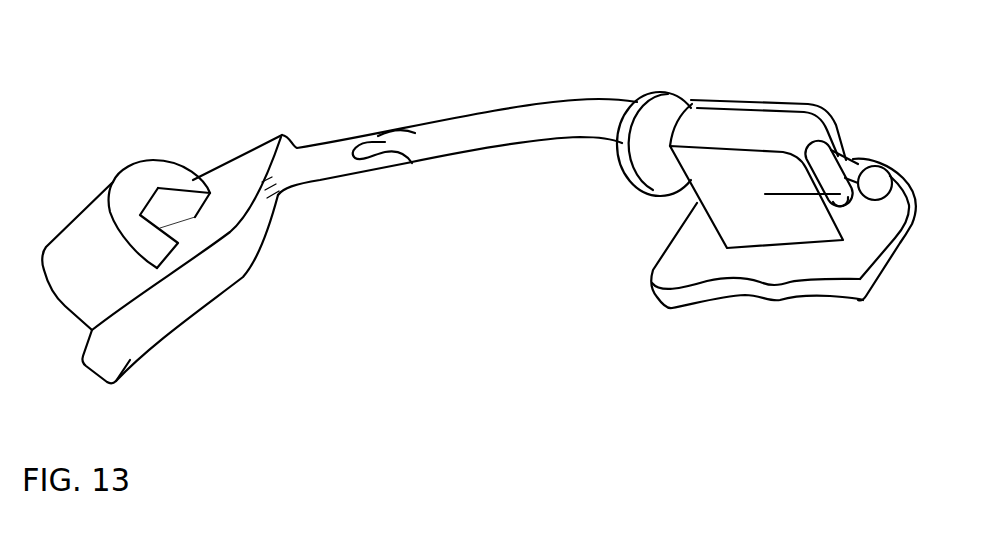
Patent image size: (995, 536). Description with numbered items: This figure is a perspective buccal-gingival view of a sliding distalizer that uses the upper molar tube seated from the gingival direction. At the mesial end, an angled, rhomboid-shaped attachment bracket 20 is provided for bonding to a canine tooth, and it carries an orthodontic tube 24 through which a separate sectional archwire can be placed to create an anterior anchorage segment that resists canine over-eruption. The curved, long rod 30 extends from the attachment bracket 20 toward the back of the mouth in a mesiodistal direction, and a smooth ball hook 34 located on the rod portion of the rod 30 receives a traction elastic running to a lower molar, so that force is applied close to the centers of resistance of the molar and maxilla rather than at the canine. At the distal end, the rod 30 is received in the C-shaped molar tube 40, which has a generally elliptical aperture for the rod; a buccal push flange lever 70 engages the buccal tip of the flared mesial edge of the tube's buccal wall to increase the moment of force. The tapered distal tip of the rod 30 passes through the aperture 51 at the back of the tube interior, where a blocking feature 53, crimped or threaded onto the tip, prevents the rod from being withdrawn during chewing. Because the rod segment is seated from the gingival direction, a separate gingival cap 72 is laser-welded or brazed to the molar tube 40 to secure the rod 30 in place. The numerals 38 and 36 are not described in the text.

The attachment bracket 20 is at (227, 173).
The orthodontic tube 24 is at (73, 307).
The rod 30 is at (317, 157).
The ball hook 34 is at (383, 145).
The buccal push flange lever 70 is at (653, 155).
The gingival cap 72 is at (805, 107).
The body / housing 38 is at (715, 128).
The aperture 51 is at (765, 194).
The molar tube 40 is at (845, 150).
The blocking feature 53 is at (873, 185).
The bracket 36 is at (817, 237).